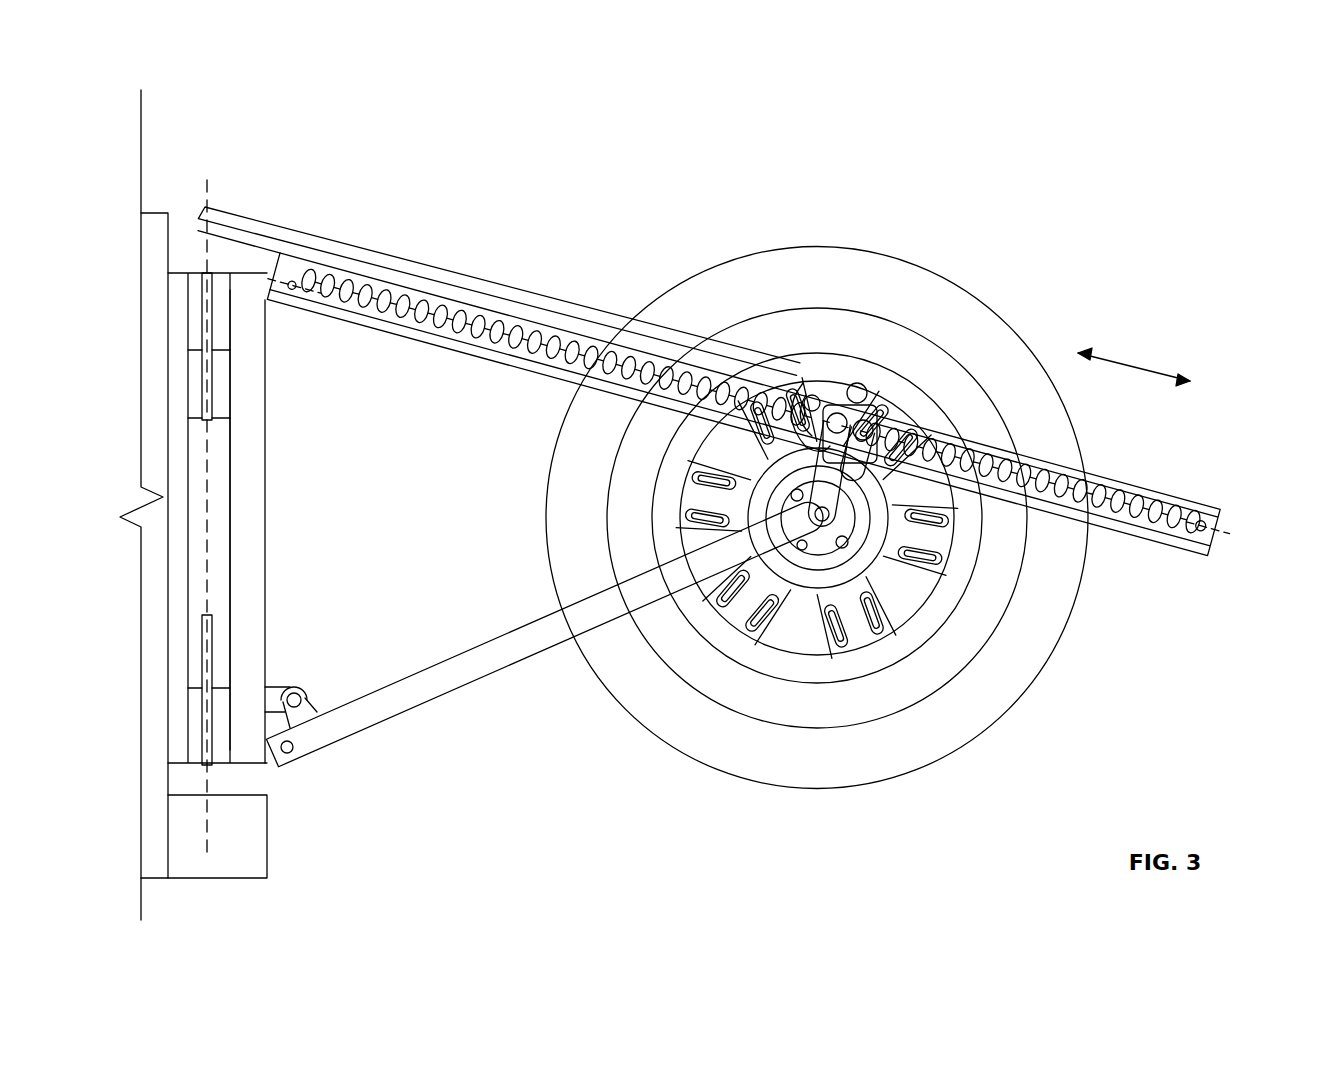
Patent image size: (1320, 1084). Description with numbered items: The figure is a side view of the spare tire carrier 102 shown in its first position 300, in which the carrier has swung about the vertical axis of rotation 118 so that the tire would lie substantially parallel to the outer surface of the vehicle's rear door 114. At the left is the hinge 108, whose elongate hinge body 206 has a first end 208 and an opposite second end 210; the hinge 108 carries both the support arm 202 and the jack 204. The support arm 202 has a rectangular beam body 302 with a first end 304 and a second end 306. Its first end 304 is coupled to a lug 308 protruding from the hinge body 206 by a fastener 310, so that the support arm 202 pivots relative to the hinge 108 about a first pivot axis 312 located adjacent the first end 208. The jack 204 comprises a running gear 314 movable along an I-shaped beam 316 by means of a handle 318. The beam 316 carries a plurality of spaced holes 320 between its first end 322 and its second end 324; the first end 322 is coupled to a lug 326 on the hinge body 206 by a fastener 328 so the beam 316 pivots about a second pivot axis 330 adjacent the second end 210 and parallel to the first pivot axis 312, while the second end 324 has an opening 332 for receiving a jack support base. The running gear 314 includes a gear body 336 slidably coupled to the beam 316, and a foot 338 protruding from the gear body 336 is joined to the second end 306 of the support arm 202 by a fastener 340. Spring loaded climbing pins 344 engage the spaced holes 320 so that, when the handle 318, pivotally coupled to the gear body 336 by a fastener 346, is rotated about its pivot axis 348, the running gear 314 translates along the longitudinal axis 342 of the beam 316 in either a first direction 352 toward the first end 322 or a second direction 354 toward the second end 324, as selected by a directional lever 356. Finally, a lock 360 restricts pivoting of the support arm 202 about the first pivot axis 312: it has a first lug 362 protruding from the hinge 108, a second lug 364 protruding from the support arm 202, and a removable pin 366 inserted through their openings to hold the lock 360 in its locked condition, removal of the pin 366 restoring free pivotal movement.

The tire carrier 102 is at (1018, 181).
The hinge 108 is at (268, 492).
The rear door 114 is at (143, 212).
The axis of rotation 118 is at (207, 198).
The support arm 202 is at (522, 672).
The jack 204 is at (1095, 472).
The hinge body 206 is at (258, 548).
The first end 208 is at (236, 766).
The second end 210 is at (202, 272).
The first position 300 is at (512, 181).
The body 302 is at (560, 632).
The first end 304 is at (252, 796).
The second end 306 is at (842, 520).
The lug 308 is at (280, 772).
The fastener 310 is at (298, 758).
The first pivot axis 312 is at (296, 748).
The running gear 314 is at (806, 382).
The beam 316 is at (1178, 505).
The handle 318 is at (582, 306).
The spaced holes 320 is at (401, 322).
The first end 322 is at (290, 282).
The second end 324 is at (1212, 548).
The lug 326 is at (271, 304).
The fastener 328 is at (320, 266).
The second pivot axis 330 is at (289, 283).
The opening 332 is at (1212, 518).
The gear body 336 is at (905, 420).
The foot 338 is at (700, 512).
The fastener 340 is at (805, 585).
The longitudinal axis 342 is at (1222, 540).
The climbing pins 344 is at (872, 426).
The fastener 346 is at (856, 382).
The pivot axis 348 is at (846, 414).
The first direction 352 is at (1100, 352).
The second direction 354 is at (1168, 380).
The directional lever 356 is at (722, 465).
The lock 360 is at (338, 664).
The first lug 362 is at (283, 688).
The second lug 364 is at (318, 706).
The pin 366 is at (305, 695).